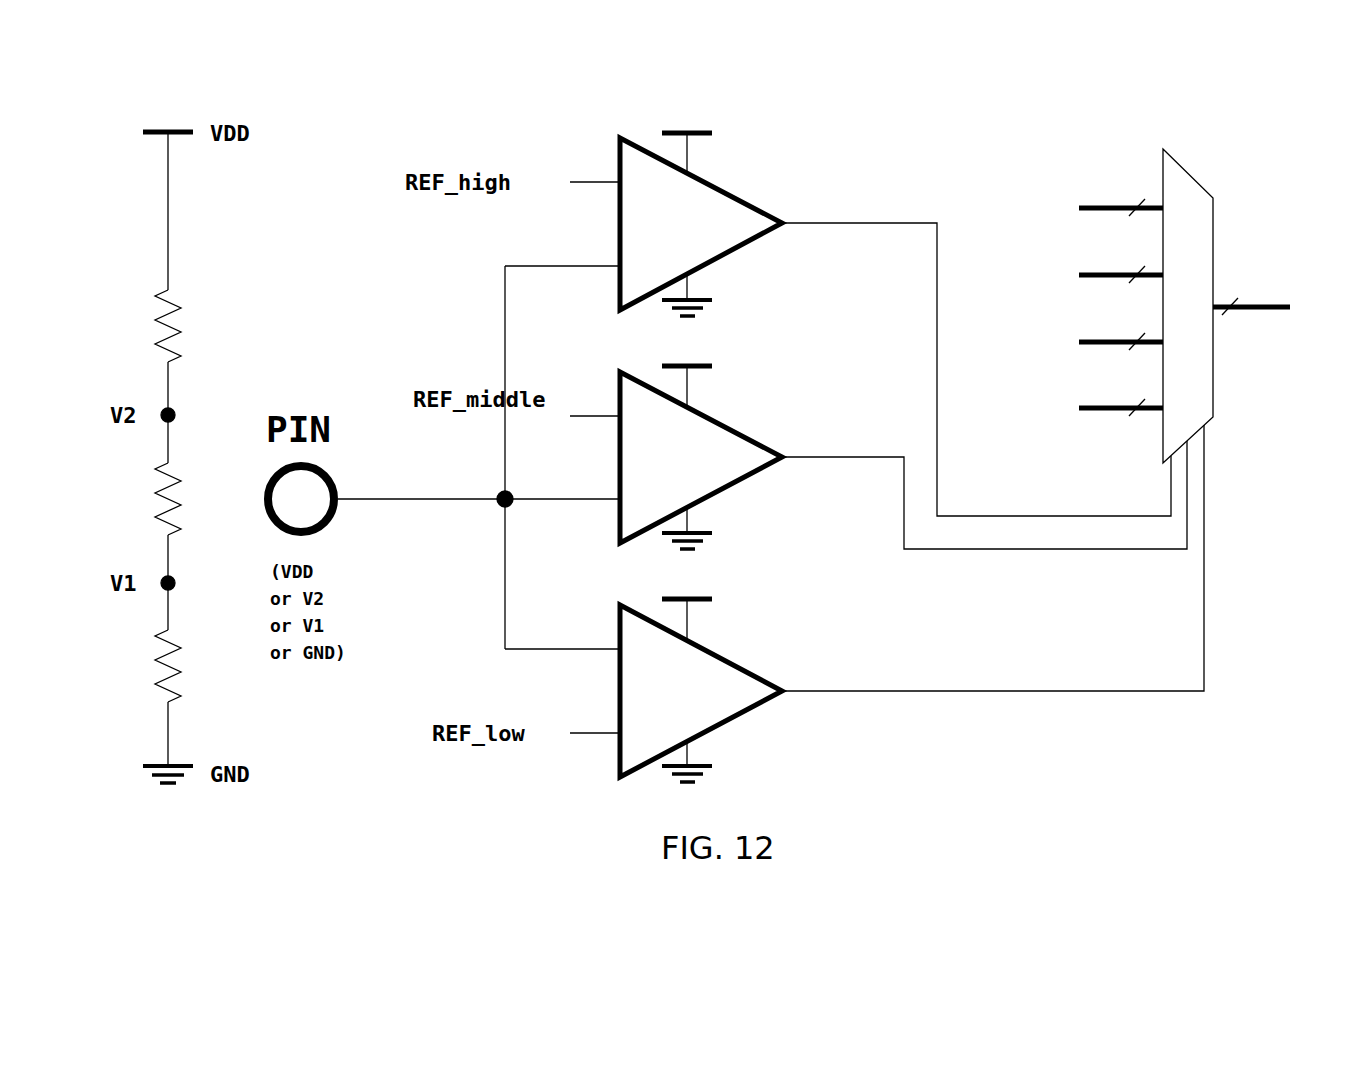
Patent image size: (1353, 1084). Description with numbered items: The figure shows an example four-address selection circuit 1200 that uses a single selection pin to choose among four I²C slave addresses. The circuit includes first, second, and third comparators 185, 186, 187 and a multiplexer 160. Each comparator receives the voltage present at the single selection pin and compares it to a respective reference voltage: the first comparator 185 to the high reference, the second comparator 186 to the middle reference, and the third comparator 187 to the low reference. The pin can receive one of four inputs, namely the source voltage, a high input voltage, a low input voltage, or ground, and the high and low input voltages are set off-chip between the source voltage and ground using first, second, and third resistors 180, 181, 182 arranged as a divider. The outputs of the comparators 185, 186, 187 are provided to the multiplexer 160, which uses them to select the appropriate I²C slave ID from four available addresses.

The first resistor 180 is at (172, 366).
The second resistor 181 is at (172, 539).
The third resistor 182 is at (172, 706).
The first comparator 185 is at (748, 237).
The second comparator 186 is at (748, 471).
The third comparator 187 is at (748, 705).
The multiplexer 160 is at (1210, 420).
The four-address selection circuit 1200 is at (1097, 126).